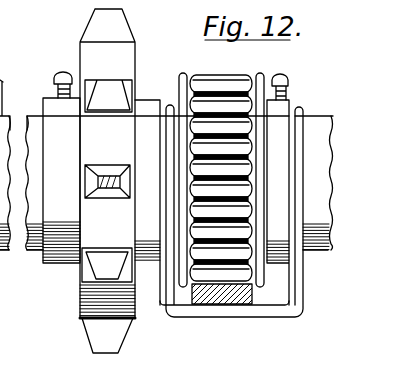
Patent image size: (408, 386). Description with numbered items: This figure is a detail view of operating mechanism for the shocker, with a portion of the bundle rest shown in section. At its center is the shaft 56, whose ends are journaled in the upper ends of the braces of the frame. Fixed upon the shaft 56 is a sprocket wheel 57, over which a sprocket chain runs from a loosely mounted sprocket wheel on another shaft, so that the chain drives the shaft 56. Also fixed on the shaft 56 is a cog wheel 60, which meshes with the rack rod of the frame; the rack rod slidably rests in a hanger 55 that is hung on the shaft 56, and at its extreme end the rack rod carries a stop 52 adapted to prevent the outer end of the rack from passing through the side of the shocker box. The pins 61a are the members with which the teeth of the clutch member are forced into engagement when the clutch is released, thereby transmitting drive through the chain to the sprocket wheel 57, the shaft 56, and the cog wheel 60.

The stop 52 is at (222, 300).
The hanger 55 is at (287, 321).
The shaft 56 is at (37, 254).
The sprocket wheel 57 is at (116, 43).
The cog wheel 60 is at (241, 83).
The pins 61a is at (1, 80).